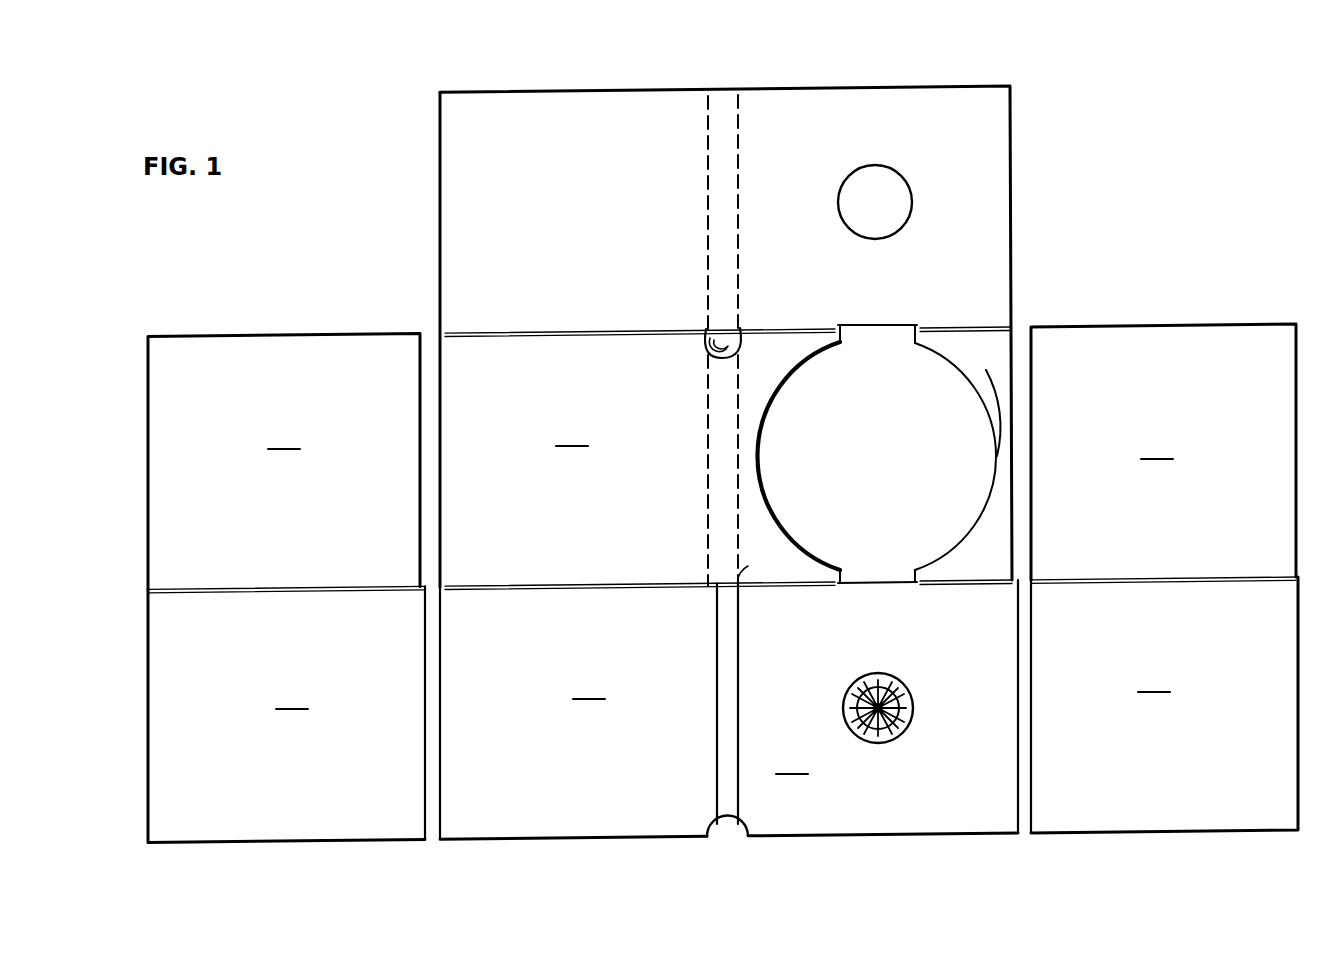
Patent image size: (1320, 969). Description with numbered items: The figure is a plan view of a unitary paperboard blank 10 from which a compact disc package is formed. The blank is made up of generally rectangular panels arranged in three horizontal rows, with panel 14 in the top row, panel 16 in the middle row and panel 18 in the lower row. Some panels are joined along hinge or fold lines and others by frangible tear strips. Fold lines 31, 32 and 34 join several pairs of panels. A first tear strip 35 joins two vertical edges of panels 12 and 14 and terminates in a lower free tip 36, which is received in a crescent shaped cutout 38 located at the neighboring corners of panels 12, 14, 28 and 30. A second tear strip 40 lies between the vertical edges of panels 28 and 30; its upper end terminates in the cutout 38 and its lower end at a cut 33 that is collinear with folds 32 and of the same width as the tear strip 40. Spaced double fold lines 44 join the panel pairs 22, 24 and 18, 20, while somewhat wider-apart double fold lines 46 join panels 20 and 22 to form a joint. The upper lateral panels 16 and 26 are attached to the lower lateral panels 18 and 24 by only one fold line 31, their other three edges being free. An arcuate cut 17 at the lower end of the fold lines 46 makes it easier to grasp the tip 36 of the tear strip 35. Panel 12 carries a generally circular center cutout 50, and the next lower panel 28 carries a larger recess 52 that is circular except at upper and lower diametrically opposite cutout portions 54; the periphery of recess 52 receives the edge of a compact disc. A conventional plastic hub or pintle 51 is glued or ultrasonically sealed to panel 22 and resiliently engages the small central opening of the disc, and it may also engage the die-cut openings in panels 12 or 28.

The paperboard blank 10 is at (1203, 187).
The panel 12 is at (931, 97).
The panel 14 is at (576, 103).
The upper lateral panel 16 is at (284, 462).
The arcuate cut 17 is at (738, 838).
The lower lateral panel 18 is at (286, 715).
The panel 20 is at (573, 756).
The panel 22 is at (883, 792).
The lower lateral panel 24 is at (1164, 705).
The upper lateral panel 26 is at (1163, 452).
The panel 28 is at (985, 373).
The panel 30 is at (572, 434).
The fold line 31 is at (298, 588).
The fold line 32 is at (578, 582).
The cut 33 is at (737, 580).
The fold line 34 is at (572, 330).
The first tear strip 35 is at (722, 100).
The tip 36 is at (741, 331).
The crescent shaped cutout 38 is at (714, 350).
The second tear strip 40 is at (724, 465).
The double fold lines 44 is at (425, 690).
The double fold lines 46 is at (720, 758).
The center cutout 50 is at (845, 204).
The hub or pintle 51 is at (898, 712).
The recess 52 is at (900, 470).
The cutout portions 54 is at (878, 333).